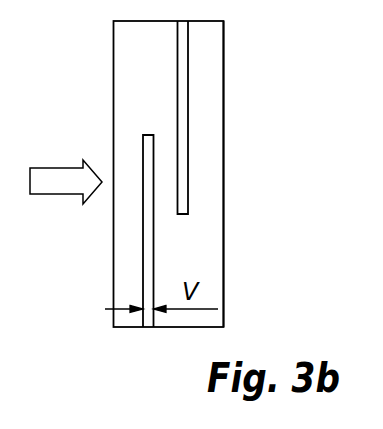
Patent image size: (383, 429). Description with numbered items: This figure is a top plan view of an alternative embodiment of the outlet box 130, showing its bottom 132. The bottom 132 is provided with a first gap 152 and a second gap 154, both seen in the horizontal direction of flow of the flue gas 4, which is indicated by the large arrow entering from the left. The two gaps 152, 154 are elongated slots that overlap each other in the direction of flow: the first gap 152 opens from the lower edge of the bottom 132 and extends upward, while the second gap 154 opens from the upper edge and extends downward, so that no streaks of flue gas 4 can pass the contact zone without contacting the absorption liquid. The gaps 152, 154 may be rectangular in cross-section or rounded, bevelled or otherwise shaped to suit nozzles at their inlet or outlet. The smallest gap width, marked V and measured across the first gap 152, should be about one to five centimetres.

The outlet box 130 is at (113, 59).
The bottom 132 is at (216, 272).
The first gap 152 is at (145, 242).
The second gap 154 is at (184, 110).
The flue gas 4 is at (65, 168).